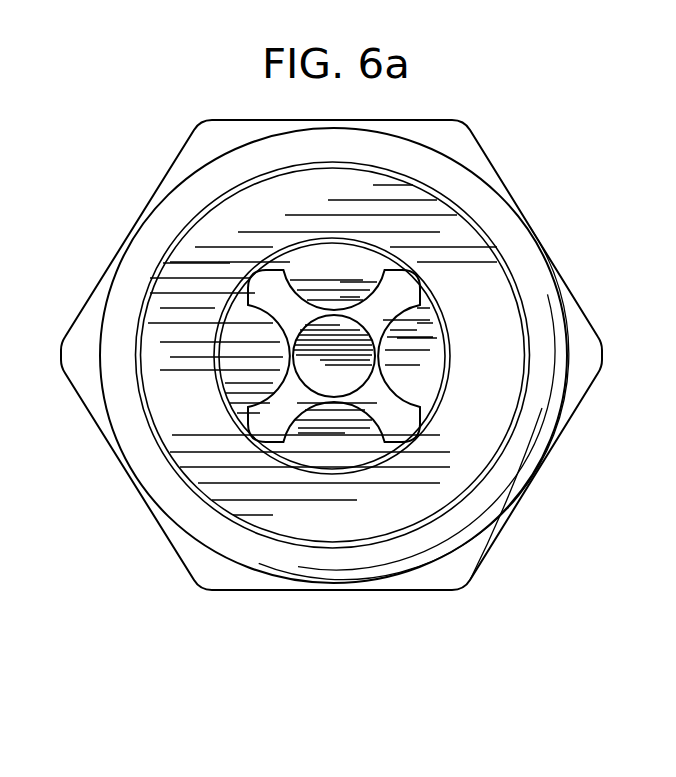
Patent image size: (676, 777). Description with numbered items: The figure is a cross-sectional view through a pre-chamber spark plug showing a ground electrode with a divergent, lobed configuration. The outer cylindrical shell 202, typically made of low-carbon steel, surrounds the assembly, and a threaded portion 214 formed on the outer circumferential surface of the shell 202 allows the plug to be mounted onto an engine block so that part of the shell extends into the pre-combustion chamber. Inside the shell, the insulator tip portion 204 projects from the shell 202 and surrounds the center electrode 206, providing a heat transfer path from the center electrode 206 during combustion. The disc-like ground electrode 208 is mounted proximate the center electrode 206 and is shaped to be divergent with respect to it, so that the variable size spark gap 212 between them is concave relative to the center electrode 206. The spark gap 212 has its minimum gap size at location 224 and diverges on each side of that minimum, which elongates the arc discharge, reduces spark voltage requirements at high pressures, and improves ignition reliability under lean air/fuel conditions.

The cylindrical shell 202 is at (482, 335).
The tip portion 204 is at (283, 303).
The center electrode 206 is at (333, 348).
The ground electrode 208 is at (232, 350).
The variable size spark gap 212 is at (378, 336).
The threaded portion 214 is at (490, 247).
The minimum gap location 224 is at (333, 402).